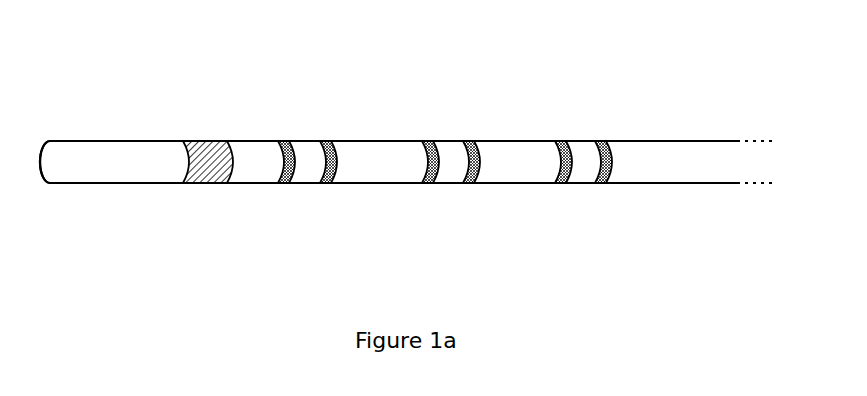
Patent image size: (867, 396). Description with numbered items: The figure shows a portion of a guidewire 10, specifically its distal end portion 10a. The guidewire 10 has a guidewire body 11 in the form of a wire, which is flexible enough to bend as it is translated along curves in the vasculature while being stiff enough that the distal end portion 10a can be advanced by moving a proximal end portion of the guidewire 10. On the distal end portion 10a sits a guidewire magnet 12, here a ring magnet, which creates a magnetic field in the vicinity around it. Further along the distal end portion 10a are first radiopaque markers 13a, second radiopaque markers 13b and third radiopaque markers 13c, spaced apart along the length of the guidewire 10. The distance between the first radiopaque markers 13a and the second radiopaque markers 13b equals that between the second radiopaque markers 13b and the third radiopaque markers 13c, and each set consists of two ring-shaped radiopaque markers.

The guidewire 10 is at (93, 88).
The distal end portion 10a is at (394, 200).
The guidewire body 11 is at (120, 200).
The guidewire magnet 12 is at (198, 185).
The first radiopaque markers 13a is at (283, 140).
The second radiopaque markers 13b is at (423, 140).
The third radiopaque markers 13c is at (560, 140).